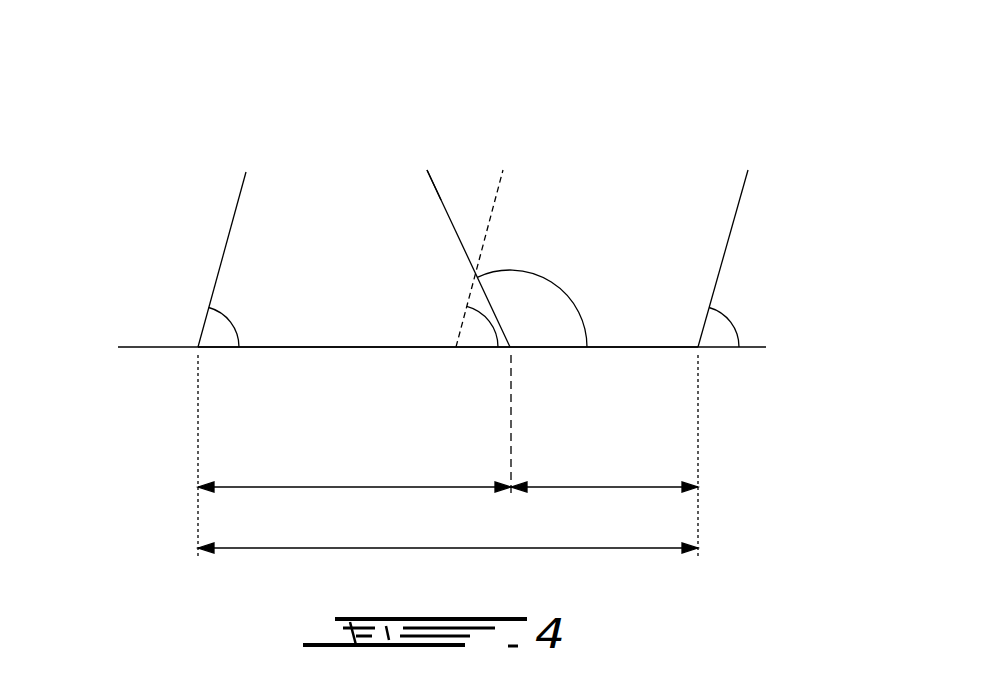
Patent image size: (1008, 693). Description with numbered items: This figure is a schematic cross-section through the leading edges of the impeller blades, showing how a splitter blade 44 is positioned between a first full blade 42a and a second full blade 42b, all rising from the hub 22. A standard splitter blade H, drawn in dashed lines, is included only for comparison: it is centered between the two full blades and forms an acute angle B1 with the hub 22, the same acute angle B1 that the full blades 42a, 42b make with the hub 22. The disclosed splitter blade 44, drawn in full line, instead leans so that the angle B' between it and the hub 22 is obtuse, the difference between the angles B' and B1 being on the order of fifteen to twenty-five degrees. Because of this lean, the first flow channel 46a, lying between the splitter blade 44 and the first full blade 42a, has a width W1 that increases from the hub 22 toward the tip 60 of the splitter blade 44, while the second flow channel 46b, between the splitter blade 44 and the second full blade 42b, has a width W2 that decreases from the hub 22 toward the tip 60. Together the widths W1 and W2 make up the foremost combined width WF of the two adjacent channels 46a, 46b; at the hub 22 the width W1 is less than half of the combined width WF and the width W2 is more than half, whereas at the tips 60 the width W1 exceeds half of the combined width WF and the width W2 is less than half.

The hub 22 is at (630, 350).
The first full blade 42a is at (762, 165).
The second full blade 42b is at (172, 147).
The splitter blade 44 is at (421, 148).
The first flow channel 46a is at (645, 209).
The second flow channel 46b is at (370, 209).
The tip of splitter blade 60 is at (438, 163).
The standard splitter blade H is at (505, 186).
The angle between splitter blade and hub B' is at (544, 285).
The angle between standard splitter blade and hub B1 is at (229, 320).
The width of first flow channel W1 is at (604, 503).
The width of second flow channel W2 is at (354, 503).
The foremost combined width WF is at (448, 564).